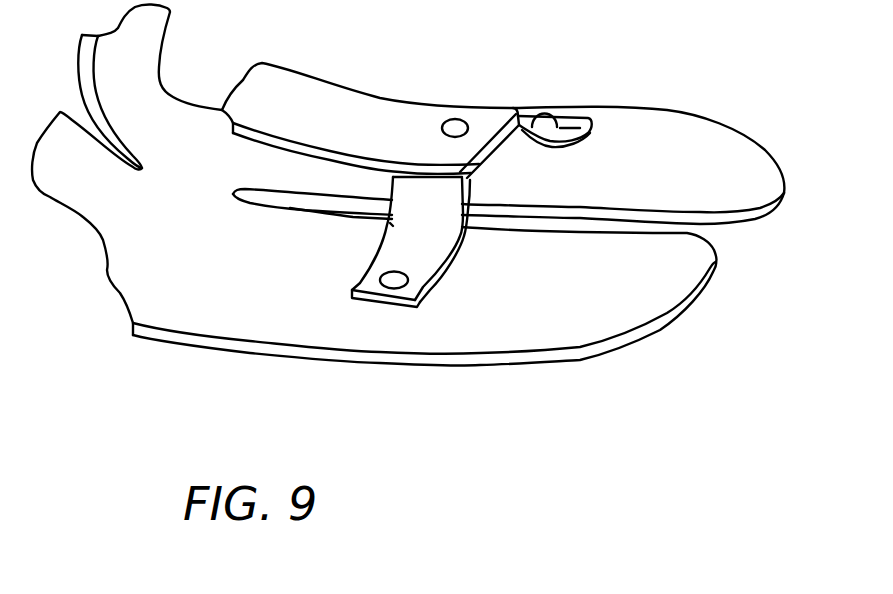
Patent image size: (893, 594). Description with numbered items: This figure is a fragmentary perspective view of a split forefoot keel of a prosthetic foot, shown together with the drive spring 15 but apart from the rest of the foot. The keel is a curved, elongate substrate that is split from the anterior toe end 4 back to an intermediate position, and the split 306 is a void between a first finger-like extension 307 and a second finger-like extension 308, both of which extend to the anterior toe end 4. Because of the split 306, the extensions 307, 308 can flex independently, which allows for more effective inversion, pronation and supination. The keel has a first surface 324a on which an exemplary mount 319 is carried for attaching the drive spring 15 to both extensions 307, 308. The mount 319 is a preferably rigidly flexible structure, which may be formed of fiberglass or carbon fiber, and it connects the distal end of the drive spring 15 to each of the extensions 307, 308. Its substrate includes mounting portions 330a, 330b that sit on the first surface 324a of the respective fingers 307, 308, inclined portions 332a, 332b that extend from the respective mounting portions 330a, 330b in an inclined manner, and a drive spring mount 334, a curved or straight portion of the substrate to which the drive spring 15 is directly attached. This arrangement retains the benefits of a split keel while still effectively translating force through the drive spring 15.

The anterior toe end 4 is at (719, 350).
The drive spring 15 is at (328, 88).
The split 306 is at (663, 210).
The first finger-like extension 307 is at (733, 147).
The second finger-like extension 308 is at (520, 340).
The mount 319 is at (430, 243).
The first surface 324a is at (665, 120).
The mounting portion 330a is at (567, 122).
The mounting portion 330b is at (370, 286).
The inclined portion 332a is at (543, 121).
The inclined portion 332b is at (400, 223).
The drive spring mount 334 is at (503, 150).